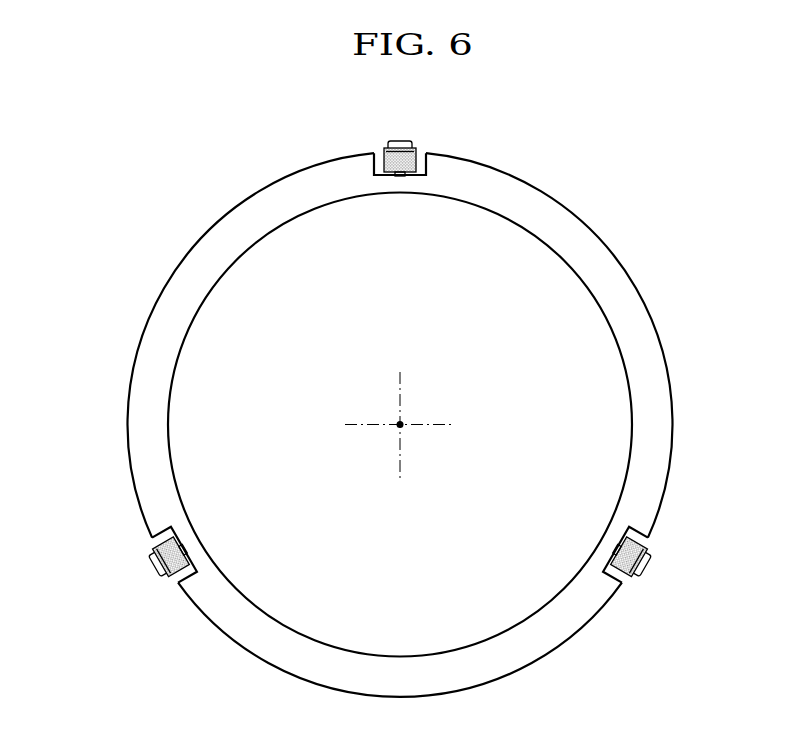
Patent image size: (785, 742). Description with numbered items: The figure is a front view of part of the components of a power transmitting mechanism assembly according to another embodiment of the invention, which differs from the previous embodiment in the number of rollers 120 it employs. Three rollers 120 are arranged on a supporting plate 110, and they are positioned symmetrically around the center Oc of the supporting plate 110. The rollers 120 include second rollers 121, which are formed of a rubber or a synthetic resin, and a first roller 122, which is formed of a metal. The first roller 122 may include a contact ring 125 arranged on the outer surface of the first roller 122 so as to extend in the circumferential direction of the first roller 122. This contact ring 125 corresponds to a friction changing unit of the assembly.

The supporting plate 110 is at (560, 218).
The rollers 120 is at (195, 135).
The second rollers 121 is at (383, 150).
The first roller 122 is at (157, 550).
The contact ring 125 is at (163, 573).
The center of the supporting plate Oc is at (400, 424).